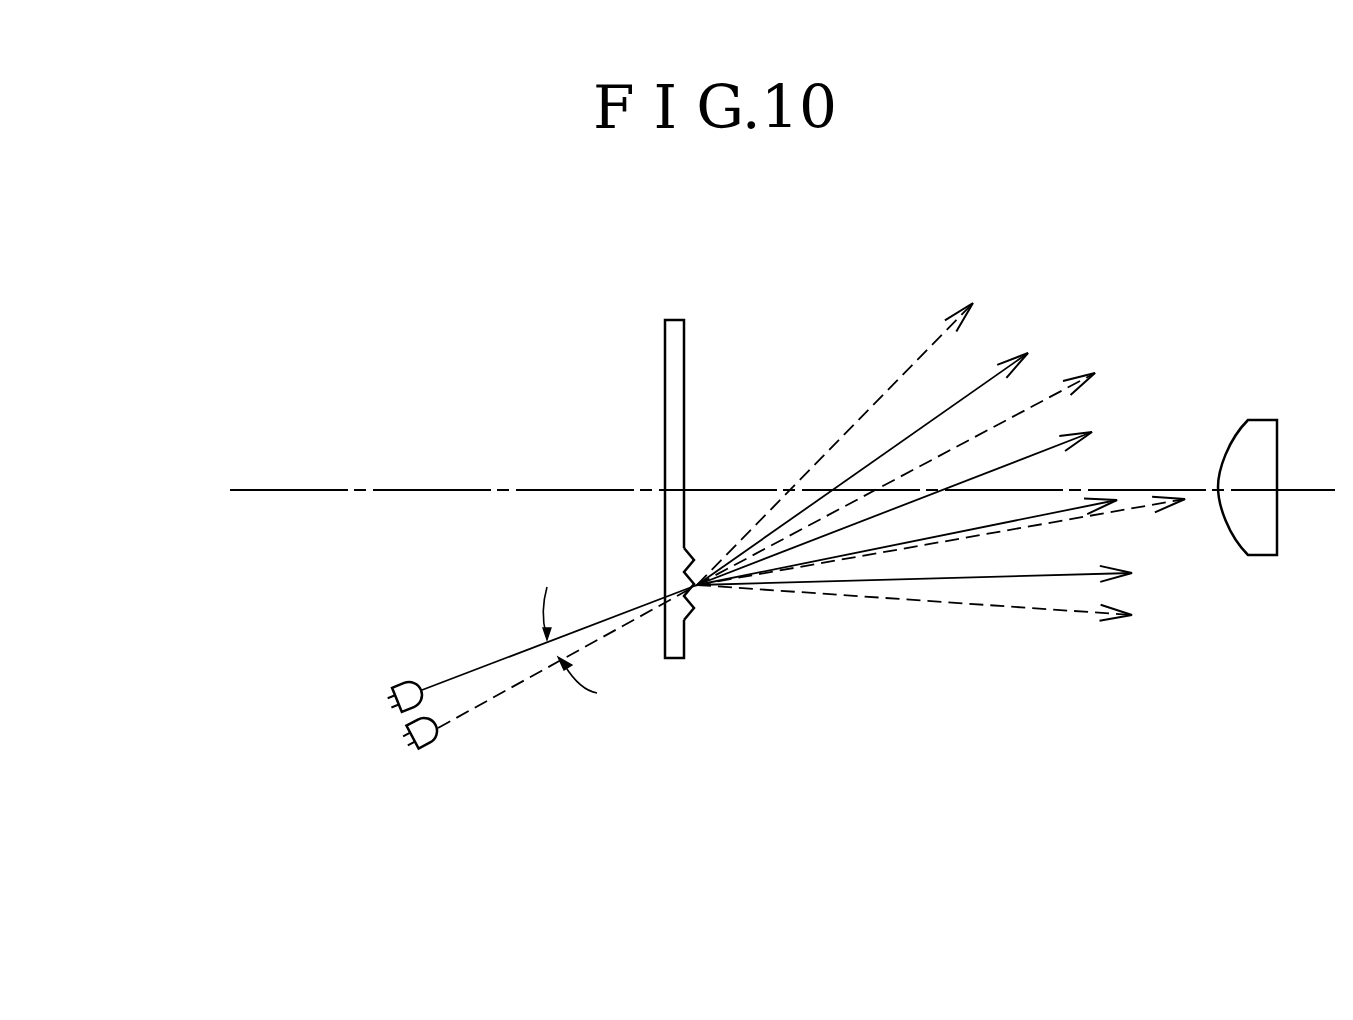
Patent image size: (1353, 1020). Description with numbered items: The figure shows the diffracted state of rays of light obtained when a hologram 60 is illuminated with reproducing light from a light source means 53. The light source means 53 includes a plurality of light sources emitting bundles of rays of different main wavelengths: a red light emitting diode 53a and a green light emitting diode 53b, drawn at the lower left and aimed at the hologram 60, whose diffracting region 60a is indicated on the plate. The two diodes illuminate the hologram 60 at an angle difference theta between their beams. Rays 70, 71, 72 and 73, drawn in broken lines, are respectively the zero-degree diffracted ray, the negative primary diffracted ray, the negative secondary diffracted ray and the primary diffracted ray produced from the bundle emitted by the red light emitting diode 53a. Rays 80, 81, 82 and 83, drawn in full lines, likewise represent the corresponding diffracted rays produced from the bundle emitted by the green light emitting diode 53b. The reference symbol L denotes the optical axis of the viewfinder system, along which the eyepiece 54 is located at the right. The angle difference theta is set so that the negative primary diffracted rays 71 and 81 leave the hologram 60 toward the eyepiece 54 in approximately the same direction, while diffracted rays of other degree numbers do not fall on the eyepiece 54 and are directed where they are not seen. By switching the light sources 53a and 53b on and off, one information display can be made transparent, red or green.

The light source means 53 is at (320, 630).
The red light emitting diode 53a is at (430, 748).
The green light emitting diode 53b is at (405, 684).
The eyepiece 54 is at (1262, 420).
The hologram 60 is at (673, 320).
The grating portion 60a is at (698, 605).
The zero-degree diffracted ray 70 is at (911, 464).
The negative primary diffracted ray 71 is at (955, 534).
The negative secondary diffracted ray 72 is at (931, 612).
The primary diffracted ray 73 is at (853, 429).
The zero-degree diffracted ray 80 is at (911, 494).
The negative primary diffracted ray 81 is at (1053, 510).
The negative secondary diffracted ray 82 is at (931, 574).
The primary diffracted ray 83 is at (880, 452).
The optical axis L is at (782, 472).
The angle difference theta is at (580, 652).